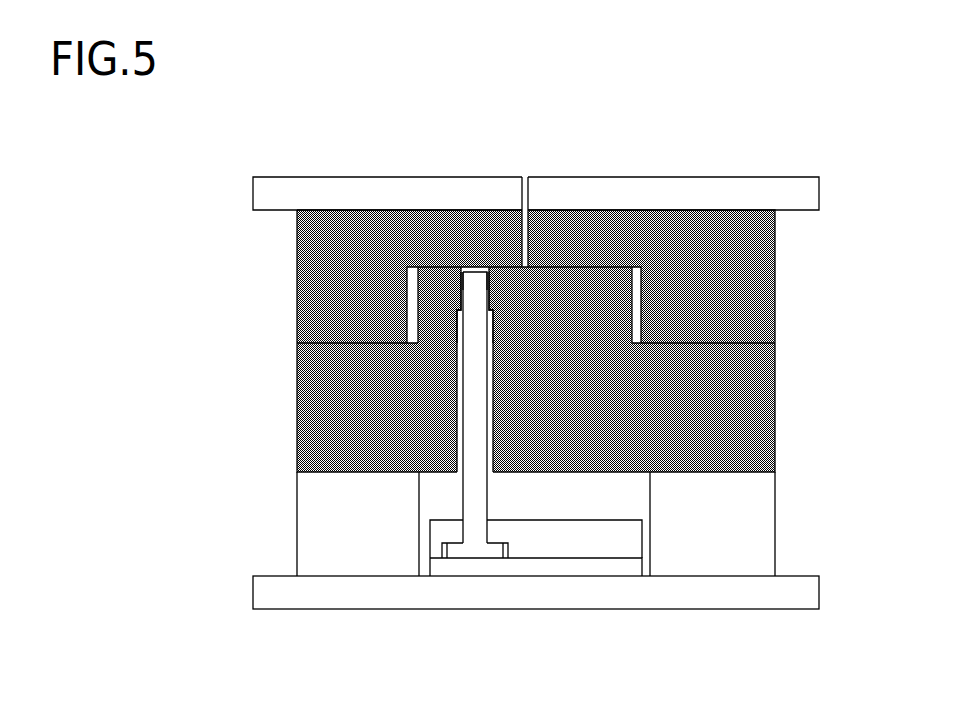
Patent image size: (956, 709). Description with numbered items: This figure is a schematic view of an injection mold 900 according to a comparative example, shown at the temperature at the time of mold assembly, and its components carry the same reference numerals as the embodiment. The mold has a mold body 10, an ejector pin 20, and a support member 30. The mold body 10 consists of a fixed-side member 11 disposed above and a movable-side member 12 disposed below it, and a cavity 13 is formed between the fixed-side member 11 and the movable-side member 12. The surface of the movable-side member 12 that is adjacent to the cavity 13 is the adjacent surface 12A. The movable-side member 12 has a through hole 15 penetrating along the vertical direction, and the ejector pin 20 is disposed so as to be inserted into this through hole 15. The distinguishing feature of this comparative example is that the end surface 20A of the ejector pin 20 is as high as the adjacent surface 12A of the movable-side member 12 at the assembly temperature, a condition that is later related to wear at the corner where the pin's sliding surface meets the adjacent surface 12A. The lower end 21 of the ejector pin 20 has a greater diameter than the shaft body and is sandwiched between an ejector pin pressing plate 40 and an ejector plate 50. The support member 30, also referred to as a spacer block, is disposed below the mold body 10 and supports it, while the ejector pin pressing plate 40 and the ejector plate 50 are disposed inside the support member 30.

The injection mold 900 is at (243, 135).
The mold body 10 is at (231, 308).
The fixed-side member 11 is at (297, 323).
The movable-side member 12 is at (297, 427).
The adjacent surface 12A is at (507, 270).
The cavity 13 is at (403, 268).
The through hole 15 is at (470, 325).
The ejector pin 20 is at (477, 343).
The end surface 20A is at (465, 273).
The lower end 21 is at (473, 552).
The support member 30 is at (298, 537).
The ejector pin pressing plate 40 is at (567, 552).
The ejector plate 50 is at (517, 572).